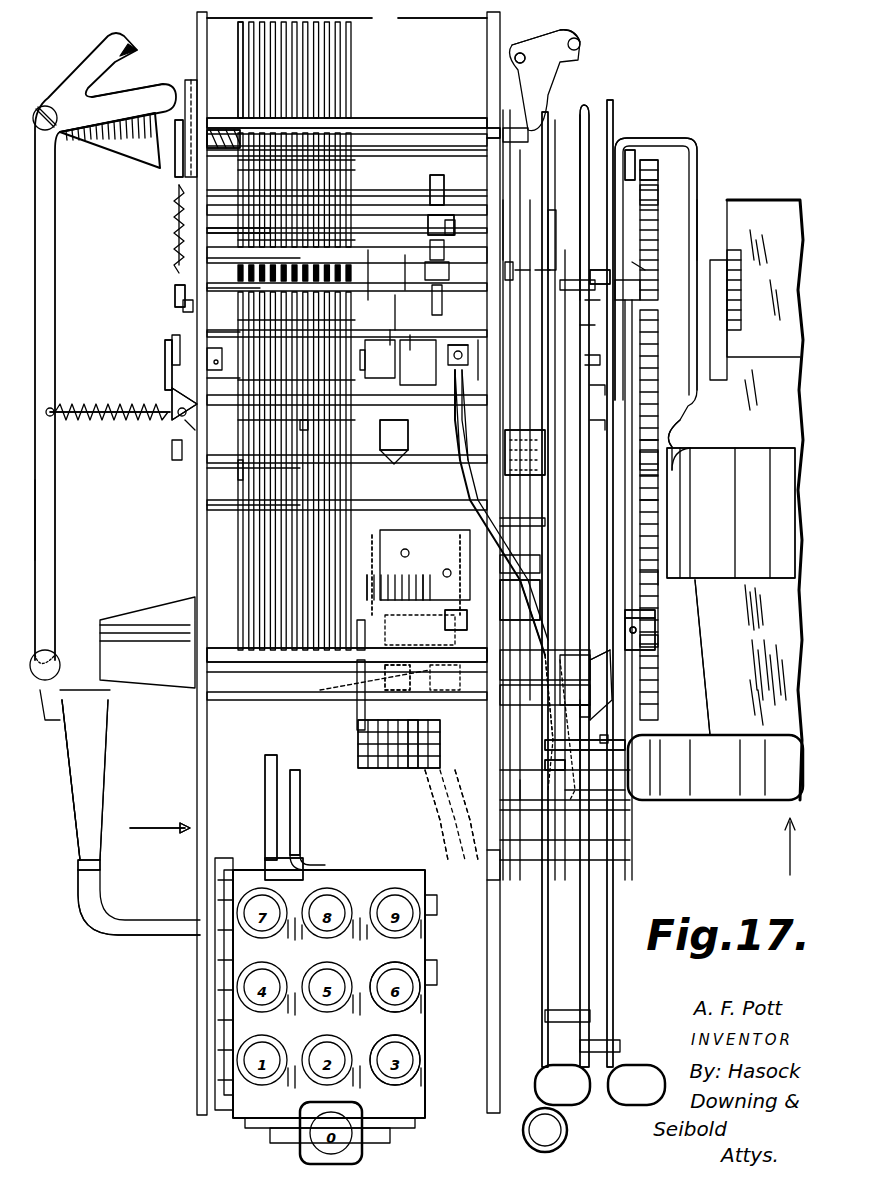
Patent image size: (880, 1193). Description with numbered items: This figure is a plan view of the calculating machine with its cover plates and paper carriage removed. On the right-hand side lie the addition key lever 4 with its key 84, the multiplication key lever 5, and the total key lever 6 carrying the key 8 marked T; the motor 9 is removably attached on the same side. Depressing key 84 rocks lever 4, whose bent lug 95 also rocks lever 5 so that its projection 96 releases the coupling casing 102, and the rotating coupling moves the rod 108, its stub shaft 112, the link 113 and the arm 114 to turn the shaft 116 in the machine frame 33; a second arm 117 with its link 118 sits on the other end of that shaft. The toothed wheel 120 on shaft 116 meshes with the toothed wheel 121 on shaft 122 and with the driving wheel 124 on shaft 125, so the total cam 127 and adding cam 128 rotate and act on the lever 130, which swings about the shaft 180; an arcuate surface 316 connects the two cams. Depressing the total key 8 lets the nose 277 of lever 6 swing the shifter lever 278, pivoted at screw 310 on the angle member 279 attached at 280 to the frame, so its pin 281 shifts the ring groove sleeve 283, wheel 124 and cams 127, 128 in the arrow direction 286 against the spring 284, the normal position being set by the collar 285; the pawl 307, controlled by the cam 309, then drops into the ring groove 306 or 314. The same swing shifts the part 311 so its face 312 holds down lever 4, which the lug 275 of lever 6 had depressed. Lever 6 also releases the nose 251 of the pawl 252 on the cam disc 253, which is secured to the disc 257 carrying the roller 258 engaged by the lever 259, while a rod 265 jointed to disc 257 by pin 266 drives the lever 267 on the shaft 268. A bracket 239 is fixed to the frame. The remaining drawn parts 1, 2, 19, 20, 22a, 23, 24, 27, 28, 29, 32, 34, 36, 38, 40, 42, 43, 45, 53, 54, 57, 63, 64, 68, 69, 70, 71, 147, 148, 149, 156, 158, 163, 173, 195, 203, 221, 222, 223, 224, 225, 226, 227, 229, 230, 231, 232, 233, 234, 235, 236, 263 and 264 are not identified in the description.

The digit keys 1 is at (415, 1052).
The zero key 2 is at (365, 1135).
The addition key lever 4 is at (584, 950).
The multiplication key lever 5 is at (612, 975).
The total key lever 6 is at (543, 510).
The total key 8 is at (567, 1138).
The motor 9 is at (752, 735).
The actuator rods 19 is at (240, 468).
The counter wheels 20 is at (342, 758).
The frame portion 22a is at (675, 440).
The carriage 23 is at (655, 535).
The bracket 24 is at (508, 450).
The frame bracket 27 is at (690, 205).
The bracket 28 is at (655, 612).
The pivot bracket 29 is at (655, 627).
The plate 32 is at (385, 543).
The machine frame 33 is at (347, 19).
The guide 34 is at (466, 618).
The lever 36 is at (522, 793).
The guide plate 38 is at (370, 680).
The link 40 is at (441, 815).
The link 42 is at (463, 815).
The wheel shaft 43 is at (422, 768).
The cross bar 45 is at (300, 675).
The key stop 53 is at (260, 870).
The direction arrow 54 is at (780, 838).
The key rod 57 is at (407, 770).
The slotted plate 63 is at (425, 575).
The tube 64 is at (592, 660).
The pipe 68 is at (138, 938).
The coupling 69 is at (78, 862).
The key lever 70 is at (265, 862).
The funnel 71 is at (78, 757).
The addition key 84 is at (537, 1078).
The lug 95 is at (615, 1040).
The projection 96 is at (650, 500).
The coupling casing 102 is at (628, 288).
The rod 108 is at (590, 360).
The stub shaft 112 is at (535, 663).
The link 113 is at (500, 522).
The arm 114 is at (600, 280).
The shaft 116 is at (175, 290).
The second arm 117 is at (180, 312).
The link 118 is at (172, 455).
The toothed wheel 120 is at (448, 225).
The toothed wheel 121 is at (440, 200).
The shaft 122 is at (210, 228).
The driving wheel 124 is at (412, 350).
The shaft 125 is at (210, 378).
The total cam 127 is at (300, 425).
The adding cam 128 is at (210, 332).
The lever 130 is at (380, 450).
The gear rack 147 is at (655, 175).
The bar 148 is at (506, 225).
The stop 149 is at (511, 265).
The cross plate 156 is at (373, 118).
The rail 158 is at (650, 475).
The shaft 163 is at (370, 285).
The bar 173 is at (215, 255).
The shaft 180 is at (300, 470).
The lever 195 is at (398, 300).
The shaft 203 is at (225, 510).
The lever arm 221 is at (50, 508).
The hook lever 222 is at (80, 122).
The pivot screw 223 is at (45, 106).
The spring 224 is at (82, 420).
The hook 225 is at (145, 98).
The link 226 is at (175, 155).
The spring 227 is at (178, 210).
The stud 229 is at (590, 712).
The guide bracket 230 is at (592, 727).
The frame plate 231 is at (498, 860).
The rod 232 is at (582, 125).
The lever 233 is at (548, 42).
The pivot 234 is at (520, 53).
The bracket 235 is at (498, 120).
The block 236 is at (222, 150).
The bracket 239 is at (660, 200).
The nose of pawl 251 is at (595, 390).
The pawl 252 is at (520, 275).
The cam disc 253 is at (553, 210).
The disc 257 is at (540, 275).
The roller 258 is at (595, 425).
The lever 259 is at (650, 440).
The pawl 263 is at (630, 168).
The plate edge 264 is at (665, 575).
The rod 265 is at (590, 305).
The pin 266 is at (585, 325).
The lever 267 is at (655, 195).
The shaft 268 is at (193, 430).
The lug 275 is at (547, 1025).
The nose 277 is at (545, 768).
The shifter lever 278 is at (650, 578).
The angle member 279 is at (608, 660).
The attachment point 280 is at (502, 592).
The pin 281 is at (465, 375).
The ring groove sleeve 283 is at (455, 375).
The spring 284 is at (478, 380).
The collar 285 is at (212, 360).
The arrow direction 286 is at (165, 832).
The ring groove 306 is at (175, 398).
The pawl 307 is at (200, 345).
The cam 309 is at (406, 270).
The screw 310 is at (530, 592).
The part 311 is at (595, 795).
The face 312 is at (604, 742).
The ring groove 314 is at (396, 345).
The arcuate surface 316 is at (240, 290).